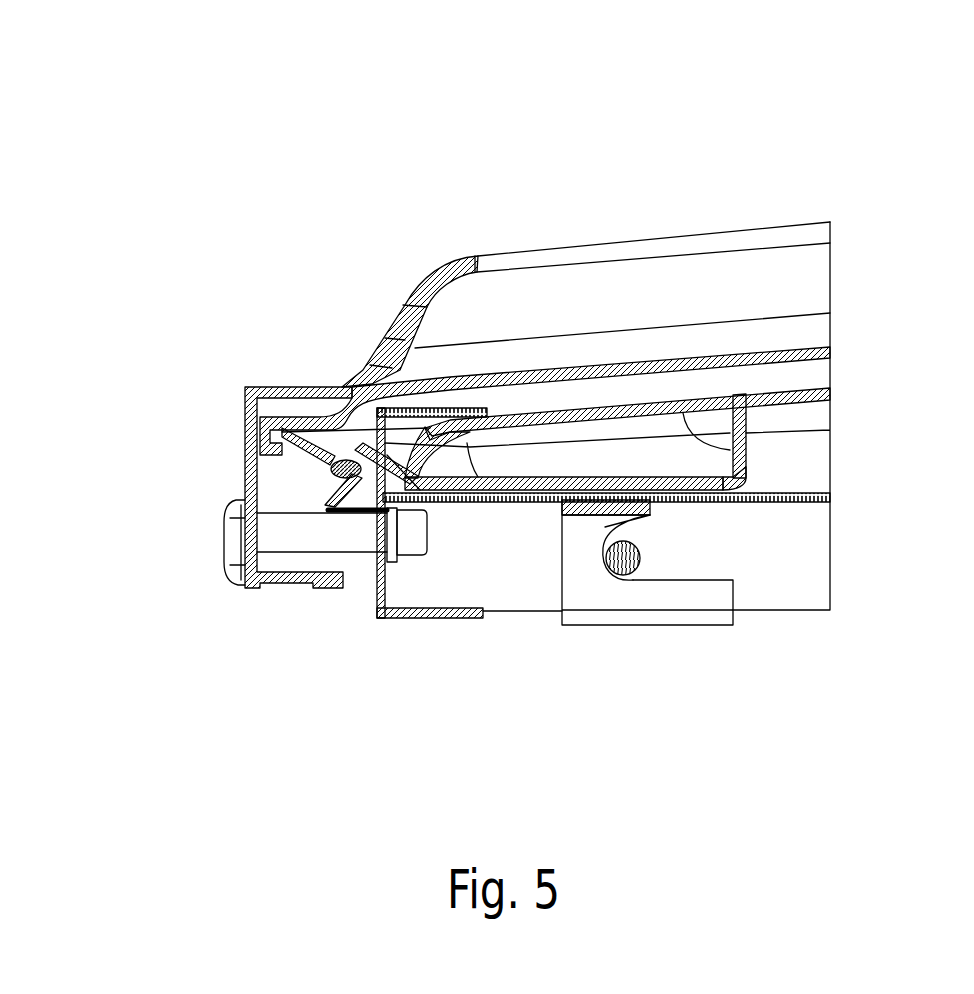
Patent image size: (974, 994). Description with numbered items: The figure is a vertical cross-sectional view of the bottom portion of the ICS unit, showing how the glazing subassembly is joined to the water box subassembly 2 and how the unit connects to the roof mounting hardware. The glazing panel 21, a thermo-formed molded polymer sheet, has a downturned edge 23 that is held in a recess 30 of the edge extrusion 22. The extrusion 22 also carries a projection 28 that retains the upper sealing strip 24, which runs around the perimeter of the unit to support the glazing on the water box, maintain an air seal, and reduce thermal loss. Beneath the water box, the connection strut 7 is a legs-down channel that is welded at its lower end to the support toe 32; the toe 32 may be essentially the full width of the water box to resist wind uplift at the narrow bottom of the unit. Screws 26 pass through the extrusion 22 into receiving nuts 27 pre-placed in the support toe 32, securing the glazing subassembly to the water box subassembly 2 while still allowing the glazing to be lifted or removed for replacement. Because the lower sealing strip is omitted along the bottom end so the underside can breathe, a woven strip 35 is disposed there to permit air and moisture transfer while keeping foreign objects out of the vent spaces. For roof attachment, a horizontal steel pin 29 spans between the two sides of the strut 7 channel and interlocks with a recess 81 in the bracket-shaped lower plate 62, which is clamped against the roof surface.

The water box subassembly 2 is at (748, 457).
The connection strut 7 is at (787, 587).
The glazing panel 21 is at (460, 258).
The edge extrusion 22 is at (257, 387).
The downturned edge 23 is at (158, 542).
The upper sealing strip 24 is at (423, 277).
The screw 26 is at (240, 505).
The nut 27 is at (393, 530).
The projection 28 is at (318, 410).
The pin 29 is at (637, 578).
The recess 30 is at (287, 408).
The support toe 32 is at (433, 617).
The woven strip 35 is at (377, 607).
The lower plate 62 is at (583, 615).
The recess 81 is at (613, 527).